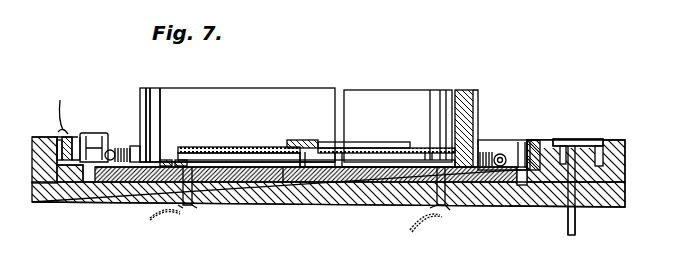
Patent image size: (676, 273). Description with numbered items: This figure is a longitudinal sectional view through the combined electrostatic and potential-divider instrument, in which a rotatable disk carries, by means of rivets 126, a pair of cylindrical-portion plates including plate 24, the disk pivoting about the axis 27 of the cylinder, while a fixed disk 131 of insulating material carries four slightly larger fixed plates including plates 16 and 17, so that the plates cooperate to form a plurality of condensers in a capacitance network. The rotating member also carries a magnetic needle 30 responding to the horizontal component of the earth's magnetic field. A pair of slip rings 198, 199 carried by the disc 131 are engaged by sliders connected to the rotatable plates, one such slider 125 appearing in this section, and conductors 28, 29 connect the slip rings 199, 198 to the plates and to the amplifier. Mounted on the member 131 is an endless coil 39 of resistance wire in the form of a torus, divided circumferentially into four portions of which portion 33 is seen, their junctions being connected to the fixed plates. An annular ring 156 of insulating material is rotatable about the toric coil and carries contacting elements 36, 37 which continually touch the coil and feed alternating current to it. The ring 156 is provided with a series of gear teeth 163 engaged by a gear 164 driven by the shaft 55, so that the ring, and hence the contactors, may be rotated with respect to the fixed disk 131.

The fixed plate 16 is at (214, 97).
The rotatable plate 24 is at (433, 96).
The fixed plate 17 is at (463, 110).
The axis 27 is at (283, 170).
The conductor 28 is at (428, 228).
The conductor 29 is at (162, 213).
The magnetic needle 30 is at (297, 140).
The coil portion 33 is at (118, 149).
The contacting element 36 is at (83, 135).
The contacting element 37 is at (483, 156).
The endless coil 39 is at (500, 147).
The shaft 55 is at (578, 232).
The slide bar 125 is at (243, 147).
The rivets 126 is at (430, 152).
The fixed disk 131 is at (377, 178).
The annular ring 156 is at (60, 134).
The gear teeth 163 is at (545, 186).
The gear 164 is at (590, 150).
The slip ring 198 is at (178, 160).
The slip ring 199 is at (165, 160).